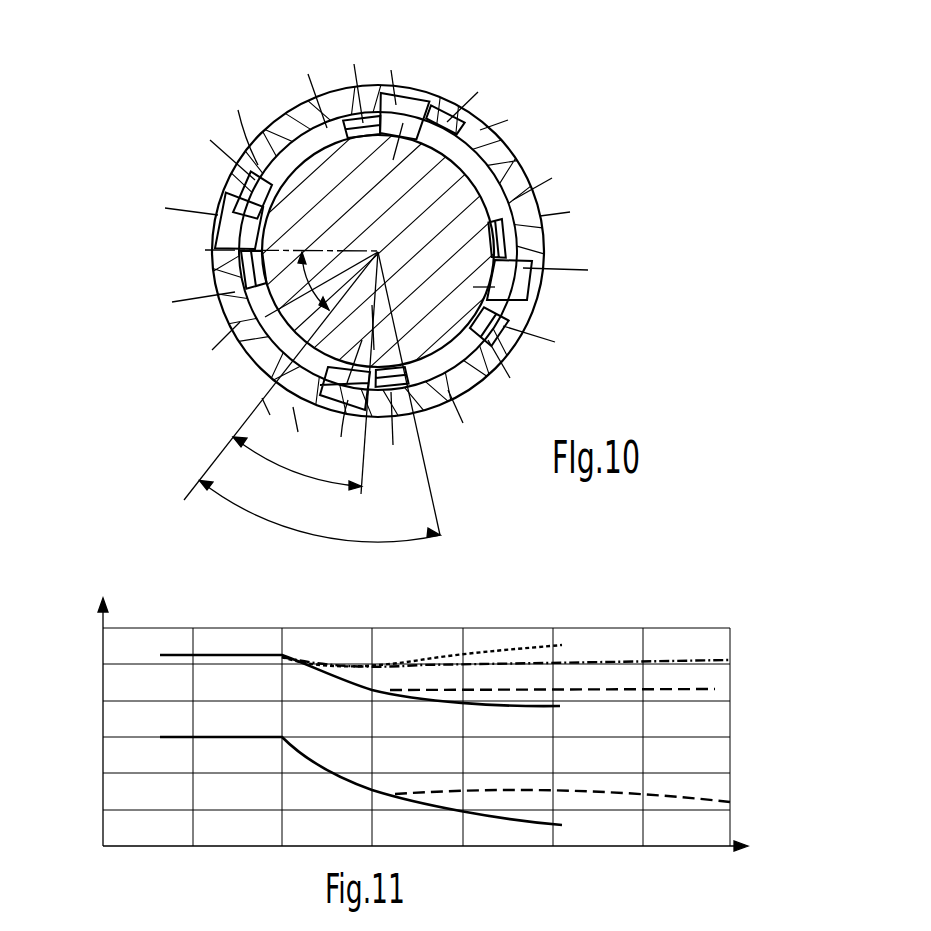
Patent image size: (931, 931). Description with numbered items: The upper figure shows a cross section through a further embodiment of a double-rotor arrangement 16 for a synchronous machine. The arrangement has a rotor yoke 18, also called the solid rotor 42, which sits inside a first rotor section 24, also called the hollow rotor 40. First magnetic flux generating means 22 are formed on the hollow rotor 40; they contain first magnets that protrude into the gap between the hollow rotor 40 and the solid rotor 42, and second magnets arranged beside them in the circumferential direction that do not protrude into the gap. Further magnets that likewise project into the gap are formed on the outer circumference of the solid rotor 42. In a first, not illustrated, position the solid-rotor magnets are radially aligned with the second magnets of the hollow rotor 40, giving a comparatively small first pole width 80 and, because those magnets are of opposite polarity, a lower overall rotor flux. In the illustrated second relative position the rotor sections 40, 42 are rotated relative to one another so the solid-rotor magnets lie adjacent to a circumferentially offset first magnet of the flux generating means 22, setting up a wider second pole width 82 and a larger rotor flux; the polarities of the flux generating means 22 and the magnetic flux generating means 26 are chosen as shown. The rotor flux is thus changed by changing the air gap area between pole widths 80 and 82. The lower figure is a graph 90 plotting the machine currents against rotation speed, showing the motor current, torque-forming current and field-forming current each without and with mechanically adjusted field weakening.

In FIG. 10, the double-rotor arrangement 16 is at (612, 168).
In FIG. 10, the rotor yoke 18 is at (335, 190).
In FIG. 10, the solid rotor 42 is at (378, 251).
In FIG. 10, the first magnetic flux generating means 22 is at (412, 89).
In FIG. 10, the first rotor section 24 is at (497, 165).
In FIG. 10, the hollow rotor 40 is at (404, 116).
In FIG. 10, the magnetic flux generating means 26 is at (241, 262).
In FIG. 10, the first pole width 80 is at (297, 469).
In FIG. 10, the second pole width 82 is at (320, 530).
In FIG. 11, the graph 90 is at (713, 614).